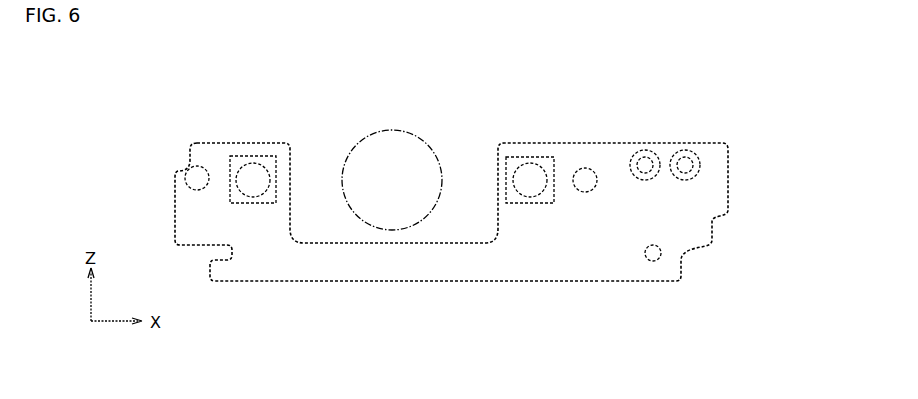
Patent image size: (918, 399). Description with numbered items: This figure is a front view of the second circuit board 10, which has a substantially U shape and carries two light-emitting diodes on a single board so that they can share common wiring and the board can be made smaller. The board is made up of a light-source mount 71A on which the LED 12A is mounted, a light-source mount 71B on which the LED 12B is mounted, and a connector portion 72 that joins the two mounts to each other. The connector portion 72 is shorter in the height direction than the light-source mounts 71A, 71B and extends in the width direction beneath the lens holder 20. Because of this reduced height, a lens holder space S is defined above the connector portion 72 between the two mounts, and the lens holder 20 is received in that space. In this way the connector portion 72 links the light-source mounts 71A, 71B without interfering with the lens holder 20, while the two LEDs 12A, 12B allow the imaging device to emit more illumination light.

The second circuit board 10 is at (497, 246).
The LED 12A is at (252, 177).
The LED 12B is at (530, 178).
The lens holder 20 is at (413, 133).
The light-source mount 71A is at (255, 237).
The light-source mount 71B is at (530, 230).
The connector portion 72 is at (396, 258).
The lens holder space S is at (313, 166).